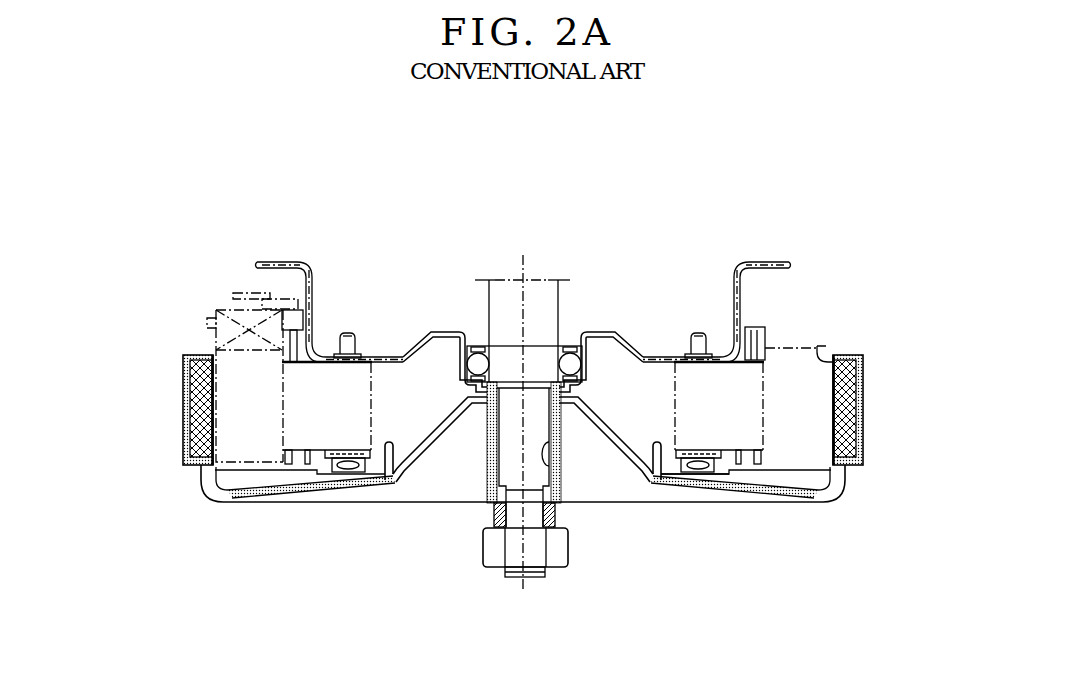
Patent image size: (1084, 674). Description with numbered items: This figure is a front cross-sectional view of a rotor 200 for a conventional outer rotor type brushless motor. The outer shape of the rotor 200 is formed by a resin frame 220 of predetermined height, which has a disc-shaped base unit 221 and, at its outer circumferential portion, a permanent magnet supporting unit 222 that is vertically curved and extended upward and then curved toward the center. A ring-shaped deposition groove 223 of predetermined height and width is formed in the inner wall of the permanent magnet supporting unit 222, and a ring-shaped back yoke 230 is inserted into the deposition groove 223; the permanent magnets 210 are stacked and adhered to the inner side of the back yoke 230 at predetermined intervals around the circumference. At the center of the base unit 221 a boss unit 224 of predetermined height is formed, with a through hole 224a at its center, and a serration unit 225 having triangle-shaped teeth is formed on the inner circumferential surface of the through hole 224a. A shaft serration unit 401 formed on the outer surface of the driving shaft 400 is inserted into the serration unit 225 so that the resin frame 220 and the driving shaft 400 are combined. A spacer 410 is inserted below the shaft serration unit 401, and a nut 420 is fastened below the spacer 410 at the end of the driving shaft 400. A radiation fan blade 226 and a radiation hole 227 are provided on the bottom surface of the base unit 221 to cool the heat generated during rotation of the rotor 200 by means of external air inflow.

The rotor 200 is at (151, 379).
The permanent magnet 210 is at (192, 386).
The back yoke 230 is at (190, 427).
The resin frame 220 is at (283, 509).
The base unit 221 is at (363, 483).
The permanent magnet supporting unit 222 is at (865, 419).
The deposition groove 223 is at (818, 347).
The boss unit 224 is at (560, 470).
The through hole 224a is at (537, 398).
The serration unit 225 is at (562, 418).
The radiation fan blade 226 is at (800, 480).
The radiation hole 227 is at (730, 483).
The driving shaft 400 is at (484, 304).
The shaft serration unit 401 is at (488, 427).
The spacer 410 is at (493, 512).
The nut 420 is at (560, 555).